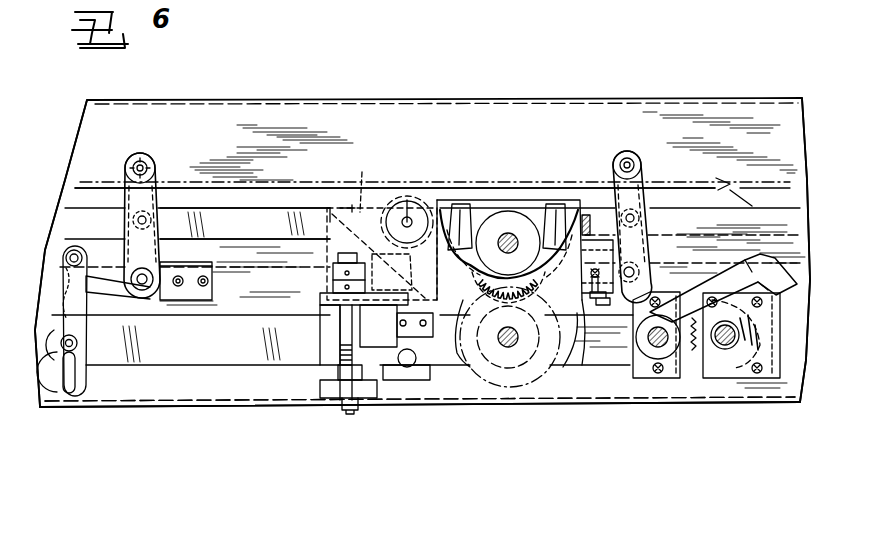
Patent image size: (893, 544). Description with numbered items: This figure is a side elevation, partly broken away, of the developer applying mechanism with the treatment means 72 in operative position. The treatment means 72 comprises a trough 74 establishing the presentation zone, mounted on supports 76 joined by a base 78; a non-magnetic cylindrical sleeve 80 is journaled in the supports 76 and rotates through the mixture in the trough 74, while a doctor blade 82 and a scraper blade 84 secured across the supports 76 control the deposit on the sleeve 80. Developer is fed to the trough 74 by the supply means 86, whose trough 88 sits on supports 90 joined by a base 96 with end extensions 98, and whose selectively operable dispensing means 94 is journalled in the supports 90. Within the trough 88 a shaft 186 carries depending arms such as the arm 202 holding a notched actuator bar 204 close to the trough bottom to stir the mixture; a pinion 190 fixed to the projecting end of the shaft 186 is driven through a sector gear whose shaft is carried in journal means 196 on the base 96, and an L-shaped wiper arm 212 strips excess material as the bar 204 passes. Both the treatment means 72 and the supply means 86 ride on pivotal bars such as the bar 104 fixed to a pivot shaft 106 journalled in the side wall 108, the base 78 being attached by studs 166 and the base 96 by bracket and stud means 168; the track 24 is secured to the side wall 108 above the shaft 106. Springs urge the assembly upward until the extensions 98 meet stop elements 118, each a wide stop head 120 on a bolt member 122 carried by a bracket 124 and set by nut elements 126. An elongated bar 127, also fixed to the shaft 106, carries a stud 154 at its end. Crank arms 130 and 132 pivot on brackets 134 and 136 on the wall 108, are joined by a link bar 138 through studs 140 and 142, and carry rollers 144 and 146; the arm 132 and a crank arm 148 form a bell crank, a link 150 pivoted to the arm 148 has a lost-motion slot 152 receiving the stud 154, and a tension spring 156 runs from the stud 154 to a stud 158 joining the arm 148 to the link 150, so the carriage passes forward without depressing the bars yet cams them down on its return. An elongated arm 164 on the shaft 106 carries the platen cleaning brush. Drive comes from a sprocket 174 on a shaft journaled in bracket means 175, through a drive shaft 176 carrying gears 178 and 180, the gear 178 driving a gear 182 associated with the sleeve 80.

The track 24 is at (672, 188).
The treatment means 72 is at (520, 200).
The trough 74 is at (594, 218).
The supports 76 is at (553, 205).
The base 78 is at (578, 305).
The cylindrical sleeve member 80 is at (505, 222).
The doctor blade 82 is at (584, 213).
The scraper blade 84 is at (456, 210).
The supply means 86 is at (351, 196).
The trough 88 is at (333, 246).
The supports 90 is at (327, 212).
The dispensing means 94 is at (400, 194).
The base 96 is at (387, 296).
The extensions 98 is at (320, 312).
The bar 104 is at (628, 378).
The pivot shaft 106 is at (664, 348).
The side wall 108 is at (780, 201).
The stop elements 118 is at (324, 276).
The stop heads 120 is at (320, 294).
The bolt members 122 is at (345, 334).
The brackets 124 is at (378, 395).
The nut elements 126 is at (356, 402).
The elongated bar 127 is at (227, 352).
The crank arm 130 is at (636, 244).
The crank arm 132 is at (126, 240).
The bracket 134 is at (598, 305).
The bracket 136 is at (184, 262).
The link bar 138 is at (264, 237).
The stud 140 is at (640, 212).
The stud 142 is at (138, 218).
The roller 144 is at (614, 162).
The roller 146 is at (150, 162).
The crank arm 148 is at (109, 279).
The link 150 is at (90, 387).
The lost-motion slot 152 is at (62, 392).
The stud member 154 is at (85, 348).
The tension spring 156 is at (66, 308).
The stud 158 is at (72, 252).
The elongated arm 164 is at (745, 265).
The studs 166 is at (634, 272).
The bracket and stud means 168 is at (418, 314).
The sprocket 174 is at (697, 350).
The bracket means 175 is at (510, 346).
The drive shaft 176 is at (773, 282).
The gear 178 is at (490, 345).
The gear 180 is at (538, 372).
The gear 182 is at (472, 348).
The shaft 186 is at (407, 222).
The gear or pinion 190 is at (371, 182).
The journal means 196 is at (404, 375).
The depending arm 202 is at (423, 203).
The notched actuator bar 204 is at (404, 270).
The arm 212 is at (356, 198).